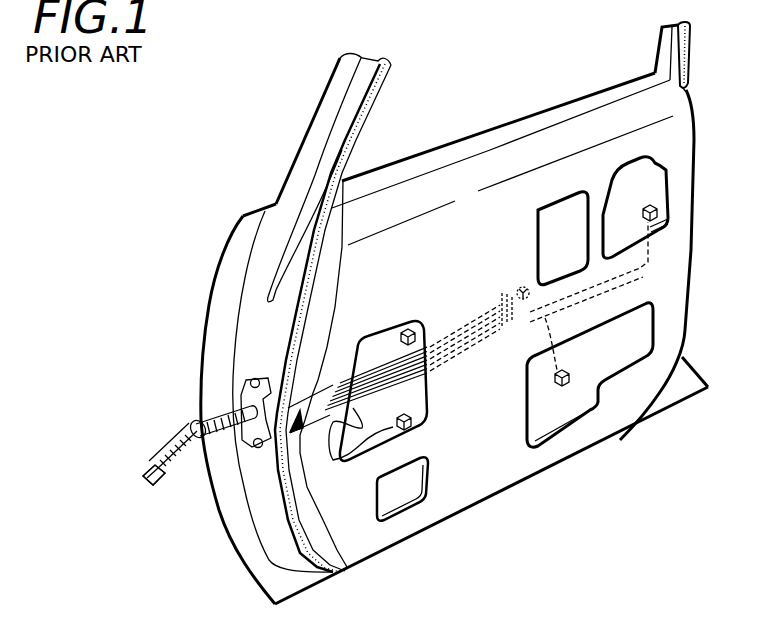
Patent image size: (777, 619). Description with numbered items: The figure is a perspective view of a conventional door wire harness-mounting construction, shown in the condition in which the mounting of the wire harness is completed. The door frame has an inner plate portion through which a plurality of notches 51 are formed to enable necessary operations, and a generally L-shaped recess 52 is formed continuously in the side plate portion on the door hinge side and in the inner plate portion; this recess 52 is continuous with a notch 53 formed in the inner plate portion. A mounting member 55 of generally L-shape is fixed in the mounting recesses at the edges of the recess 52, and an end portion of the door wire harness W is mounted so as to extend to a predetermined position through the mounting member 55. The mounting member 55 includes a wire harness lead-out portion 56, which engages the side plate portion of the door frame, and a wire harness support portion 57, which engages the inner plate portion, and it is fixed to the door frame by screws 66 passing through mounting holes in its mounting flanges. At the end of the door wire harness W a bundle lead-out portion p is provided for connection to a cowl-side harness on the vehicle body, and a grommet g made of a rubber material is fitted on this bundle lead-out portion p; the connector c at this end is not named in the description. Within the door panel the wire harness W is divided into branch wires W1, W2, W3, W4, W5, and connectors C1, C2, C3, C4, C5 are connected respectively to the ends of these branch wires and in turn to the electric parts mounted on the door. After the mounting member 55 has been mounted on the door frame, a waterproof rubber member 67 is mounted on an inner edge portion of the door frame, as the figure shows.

The mounting member 55 is at (300, 453).
The waterproof rubber member 67 is at (350, 137).
The wire harness lead-out portion 56 is at (240, 383).
The screws 66 is at (238, 394).
The bundle lead-out portion p is at (163, 437).
The connector c is at (142, 481).
The grommet g is at (193, 438).
The wire harness support portion 57 is at (323, 410).
The recess 52 is at (347, 567).
The notch 53 is at (372, 432).
The door wire harness W is at (486, 389).
The branch wire W1 is at (393, 350).
The branch wire W2 is at (365, 440).
The branch wire W3 is at (506, 287).
The branch wire W4 is at (513, 358).
The branch wire W5 is at (668, 230).
The connector C1 is at (408, 329).
The connector C2 is at (411, 427).
The connector C3 is at (543, 272).
The connector C4 is at (567, 385).
The connector C5 is at (662, 210).
The notches 51 is at (660, 240).